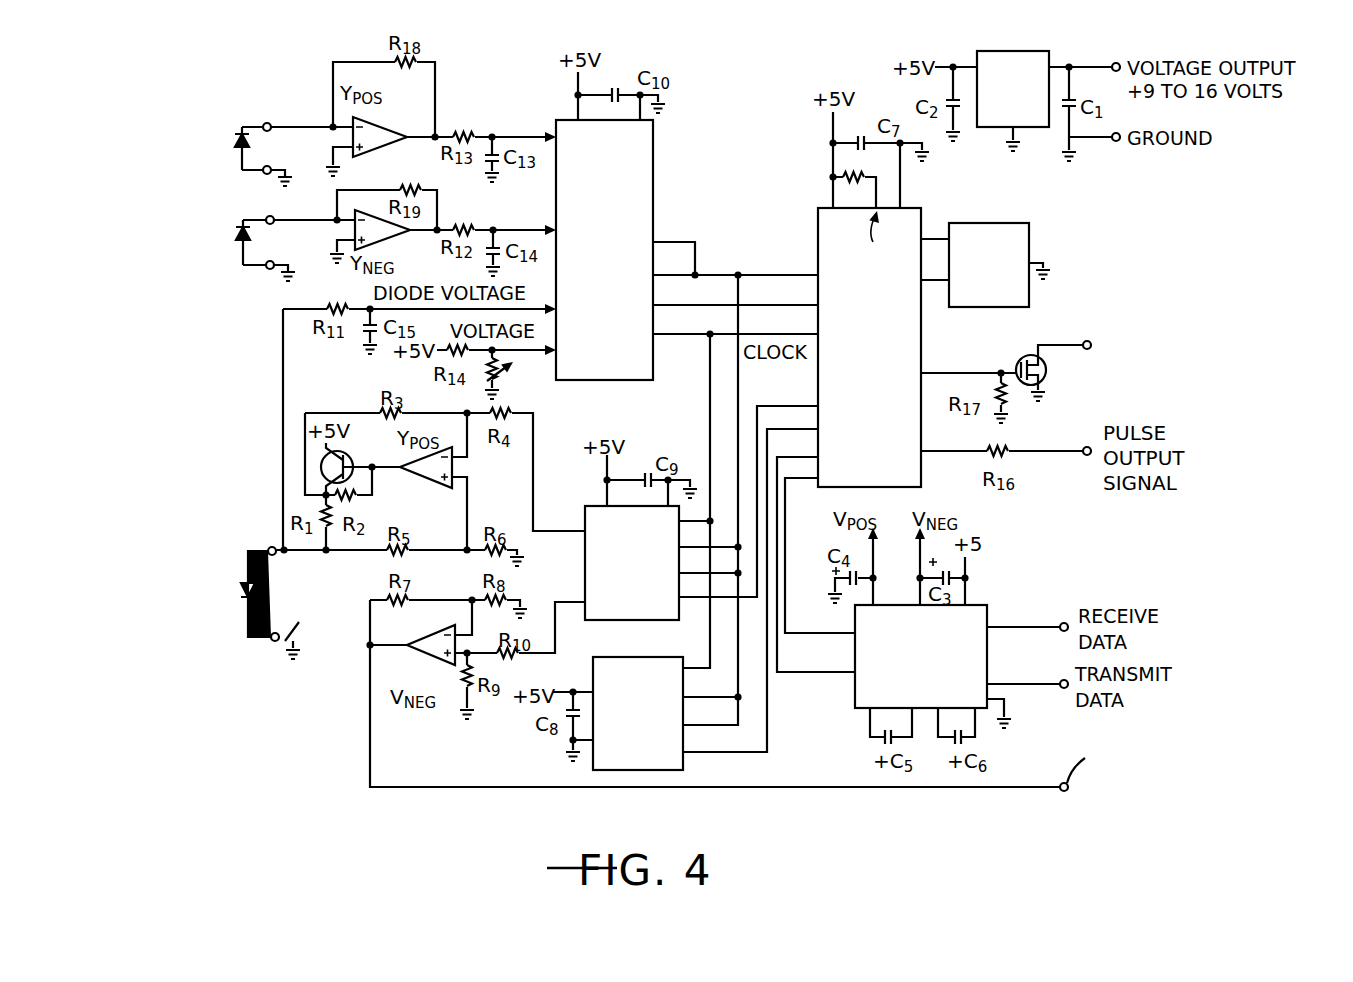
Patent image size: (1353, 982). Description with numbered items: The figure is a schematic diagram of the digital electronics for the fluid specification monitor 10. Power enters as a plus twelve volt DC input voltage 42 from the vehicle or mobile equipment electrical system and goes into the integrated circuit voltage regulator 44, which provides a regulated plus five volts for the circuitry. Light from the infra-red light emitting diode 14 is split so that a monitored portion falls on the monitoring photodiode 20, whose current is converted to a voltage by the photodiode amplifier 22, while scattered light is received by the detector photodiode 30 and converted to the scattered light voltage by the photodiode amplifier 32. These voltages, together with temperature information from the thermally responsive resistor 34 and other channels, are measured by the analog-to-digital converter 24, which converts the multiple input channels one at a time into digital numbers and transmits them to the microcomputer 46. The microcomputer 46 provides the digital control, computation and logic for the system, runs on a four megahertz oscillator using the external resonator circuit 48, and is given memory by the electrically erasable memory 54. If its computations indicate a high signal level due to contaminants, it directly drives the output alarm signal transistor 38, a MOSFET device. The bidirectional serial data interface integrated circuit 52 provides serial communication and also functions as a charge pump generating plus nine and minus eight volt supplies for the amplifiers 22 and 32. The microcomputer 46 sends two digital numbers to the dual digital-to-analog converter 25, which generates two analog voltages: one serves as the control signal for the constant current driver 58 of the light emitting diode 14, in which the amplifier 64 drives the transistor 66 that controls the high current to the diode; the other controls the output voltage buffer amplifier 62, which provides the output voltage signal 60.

The fluid specification monitor 10 is at (218, 736).
The infra-red light emitting diode 14 is at (294, 627).
The monitoring photodiode 20 is at (236, 244).
The photodiode amplifier 22 is at (385, 237).
The analog-to-digital converter 24 is at (609, 212).
The dual digital-to-analog converter 25 is at (619, 550).
The detector photodiode 30 is at (237, 150).
The photodiode amplifier 32 is at (380, 152).
The thermally responsive resistor 34 is at (502, 380).
The output alarm signal transistor 38 is at (1030, 353).
The +12 volt DC input voltage 42 is at (1122, 61).
The integrated circuit voltage regulator 44 is at (1020, 100).
The microcomputer 46 is at (877, 339).
The external resonator circuit 48 is at (1000, 276).
The bidirectional serial data interface integrated circuit 52 is at (921, 673).
The electrically erasable memory 54 is at (627, 704).
The current driver 58 is at (240, 588).
The output voltage signal 60 is at (1086, 770).
The output voltage buffer amplifier 62 is at (411, 650).
The amplifier 64 is at (420, 478).
The transistor 66 is at (346, 452).